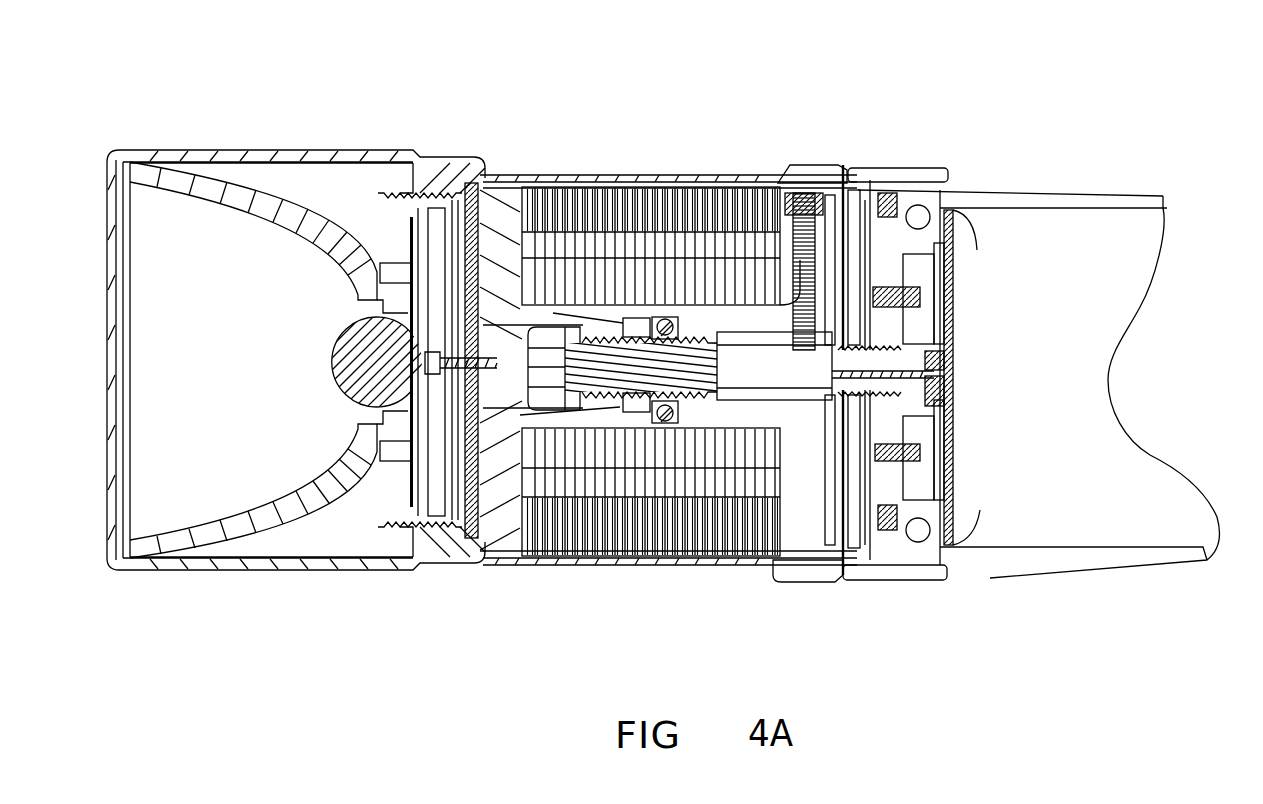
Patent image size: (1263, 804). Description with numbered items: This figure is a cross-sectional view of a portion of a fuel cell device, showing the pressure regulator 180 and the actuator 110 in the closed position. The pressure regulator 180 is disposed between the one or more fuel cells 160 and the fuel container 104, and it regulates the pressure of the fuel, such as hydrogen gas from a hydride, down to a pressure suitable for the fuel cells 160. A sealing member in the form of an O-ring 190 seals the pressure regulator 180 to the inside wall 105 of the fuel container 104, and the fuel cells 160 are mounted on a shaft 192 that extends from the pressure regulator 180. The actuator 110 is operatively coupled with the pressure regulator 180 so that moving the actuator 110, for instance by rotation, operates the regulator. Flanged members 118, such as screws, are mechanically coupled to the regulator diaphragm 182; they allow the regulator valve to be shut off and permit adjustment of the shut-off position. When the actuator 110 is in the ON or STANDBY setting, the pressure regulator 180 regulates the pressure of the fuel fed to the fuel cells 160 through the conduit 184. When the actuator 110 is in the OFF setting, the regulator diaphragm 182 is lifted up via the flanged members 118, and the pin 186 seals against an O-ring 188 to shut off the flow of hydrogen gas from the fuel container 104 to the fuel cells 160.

The fuel container 104 is at (1110, 200).
The inside wall 105 is at (1000, 210).
The actuator 110 is at (888, 173).
The flanged members 118 is at (864, 180).
The fuel cells 160 is at (632, 180).
The pressure regulator 180 is at (950, 507).
The regulator diaphragm 182 is at (960, 283).
The conduit 184 is at (830, 553).
The pin 186 is at (950, 372).
The O-ring 188 is at (947, 407).
The O-ring 190 is at (924, 553).
The shaft 192 is at (753, 325).